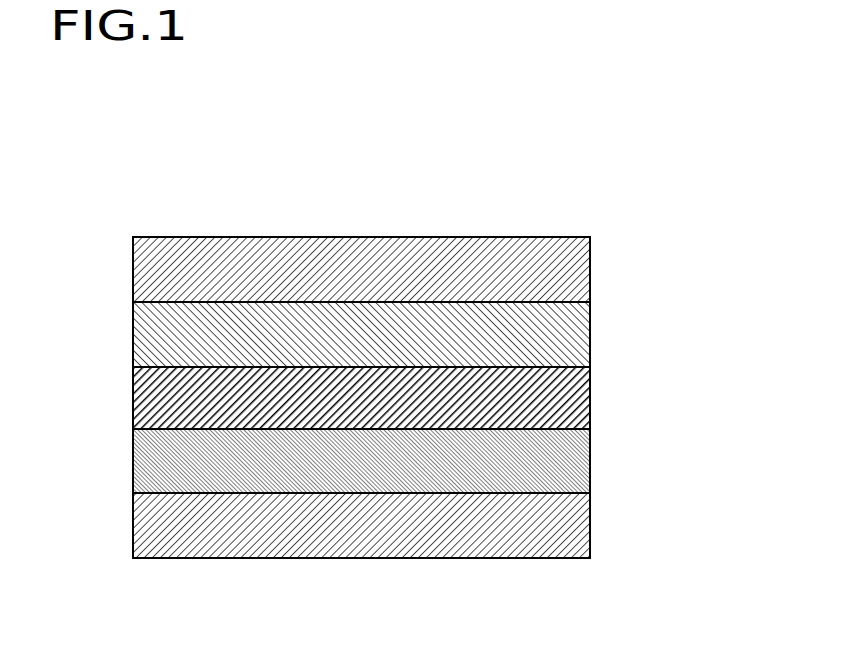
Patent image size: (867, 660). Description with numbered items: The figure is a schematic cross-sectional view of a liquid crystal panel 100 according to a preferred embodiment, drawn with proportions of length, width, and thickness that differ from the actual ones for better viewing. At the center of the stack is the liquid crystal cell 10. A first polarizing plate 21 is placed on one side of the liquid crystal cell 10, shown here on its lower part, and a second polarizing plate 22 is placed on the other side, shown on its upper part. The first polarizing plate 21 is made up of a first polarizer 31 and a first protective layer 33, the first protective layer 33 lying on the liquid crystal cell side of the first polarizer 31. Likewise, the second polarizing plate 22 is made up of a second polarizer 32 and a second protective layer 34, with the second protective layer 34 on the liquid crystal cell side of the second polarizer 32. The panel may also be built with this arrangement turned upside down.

The liquid crystal panel 100 is at (507, 207).
The second polarizing plate 22 is at (603, 238).
The first polarizing plate 21 is at (603, 432).
The liquid crystal cell 10 is at (562, 403).
The second polarizer 32 is at (158, 265).
The second protective layer 34 is at (158, 332).
The first protective layer 33 is at (158, 462).
The first polarizer 31 is at (158, 532).